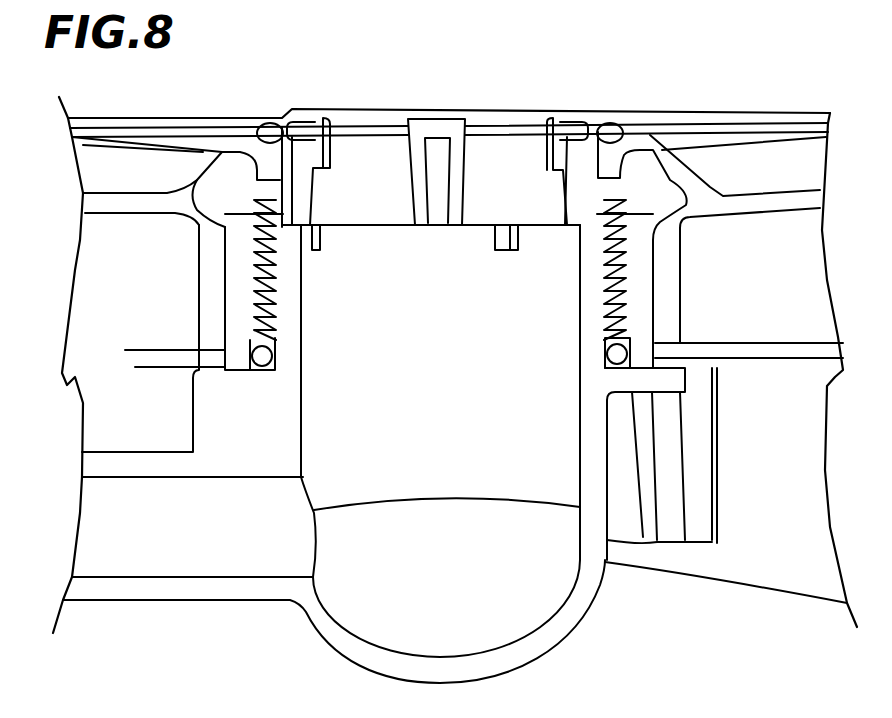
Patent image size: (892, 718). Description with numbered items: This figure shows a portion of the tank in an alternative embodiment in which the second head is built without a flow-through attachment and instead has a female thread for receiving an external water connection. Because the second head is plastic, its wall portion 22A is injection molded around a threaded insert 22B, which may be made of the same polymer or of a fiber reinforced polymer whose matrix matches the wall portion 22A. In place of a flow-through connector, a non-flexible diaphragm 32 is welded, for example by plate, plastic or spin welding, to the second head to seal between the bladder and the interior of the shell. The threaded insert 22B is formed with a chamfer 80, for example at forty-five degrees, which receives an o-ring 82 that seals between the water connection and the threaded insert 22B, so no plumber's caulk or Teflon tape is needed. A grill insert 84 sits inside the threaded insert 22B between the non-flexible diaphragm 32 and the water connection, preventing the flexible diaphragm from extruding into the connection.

The non-flexible diaphragm 32 is at (735, 133).
The wall portion 22A is at (670, 258).
The threaded insert 22B is at (643, 297).
The chamfer 80 is at (614, 368).
The o-ring 82 is at (613, 357).
The grill insert 84 is at (390, 226).